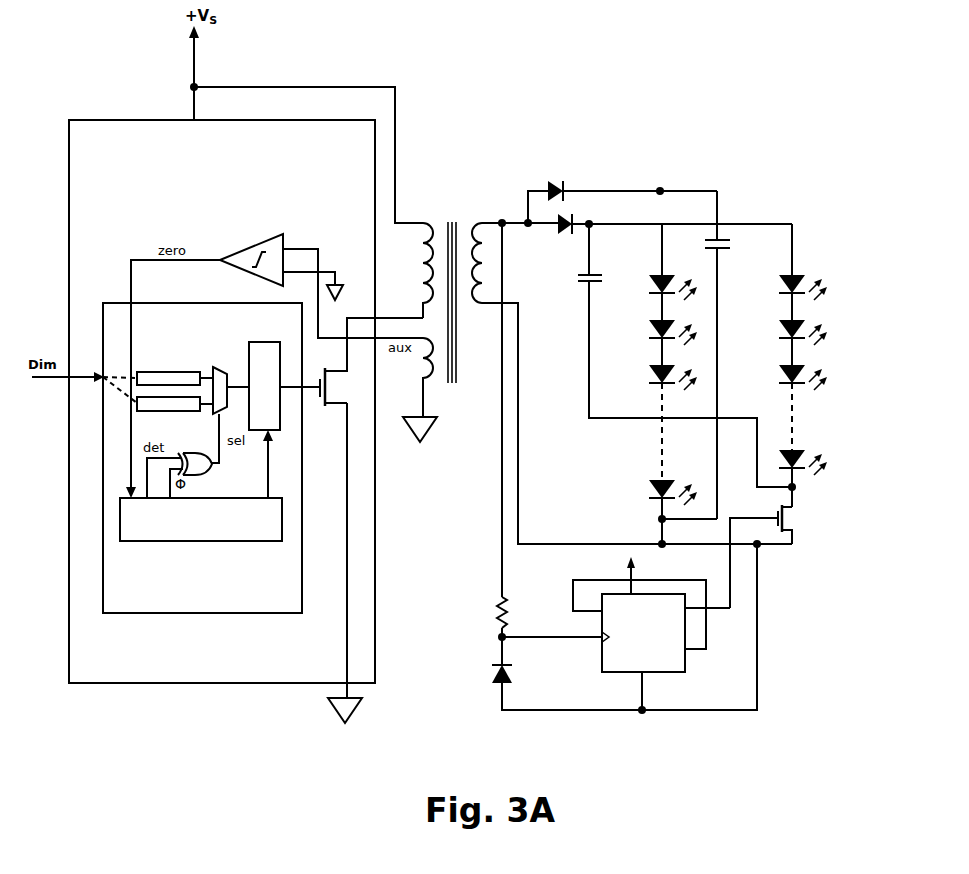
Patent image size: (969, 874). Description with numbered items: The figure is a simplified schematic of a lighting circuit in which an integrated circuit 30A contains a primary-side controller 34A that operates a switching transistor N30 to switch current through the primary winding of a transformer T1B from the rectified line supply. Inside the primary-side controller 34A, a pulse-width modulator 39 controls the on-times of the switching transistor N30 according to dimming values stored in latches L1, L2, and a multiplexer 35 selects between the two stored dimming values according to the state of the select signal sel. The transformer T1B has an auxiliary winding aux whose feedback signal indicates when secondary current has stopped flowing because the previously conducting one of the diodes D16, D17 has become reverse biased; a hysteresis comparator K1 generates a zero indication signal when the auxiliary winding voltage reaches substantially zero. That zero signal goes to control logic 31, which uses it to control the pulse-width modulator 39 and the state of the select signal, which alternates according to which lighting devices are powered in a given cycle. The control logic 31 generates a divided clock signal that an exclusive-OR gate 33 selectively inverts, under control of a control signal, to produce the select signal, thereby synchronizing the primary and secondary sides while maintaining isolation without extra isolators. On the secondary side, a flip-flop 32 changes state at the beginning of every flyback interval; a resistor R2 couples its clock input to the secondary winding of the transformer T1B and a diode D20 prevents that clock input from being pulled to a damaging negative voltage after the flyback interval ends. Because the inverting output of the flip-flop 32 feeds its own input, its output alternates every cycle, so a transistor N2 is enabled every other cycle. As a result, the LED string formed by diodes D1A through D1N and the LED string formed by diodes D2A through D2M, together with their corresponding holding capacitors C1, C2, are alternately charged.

The IC 30A is at (222, 401).
The primary-side controller 34A is at (202, 458).
The hysteresis comparator K1 is at (271, 237).
The latch L1 is at (178, 372).
The latch L2 is at (193, 414).
The multiplexer 35 is at (221, 368).
The pulse-width modulator 39 is at (270, 342).
The logical exclusive-OR gate 33 is at (206, 470).
The control logic 31 is at (201, 519).
The switching transistor N30 is at (371, 362).
The transformer T1B is at (490, 306).
The diode D16 is at (622, 191).
The diode D17 is at (675, 218).
The holding capacitor C1 is at (731, 355).
The holding capacitor C2 is at (671, 355).
The diode D1A is at (658, 352).
The diode D1N is at (660, 508).
The diode D2A is at (815, 337).
The diode D2M is at (819, 470).
The transistor N2 is at (776, 556).
The resistor R2 is at (549, 631).
The diode D20 is at (483, 677).
The flip-flop 32 is at (672, 672).